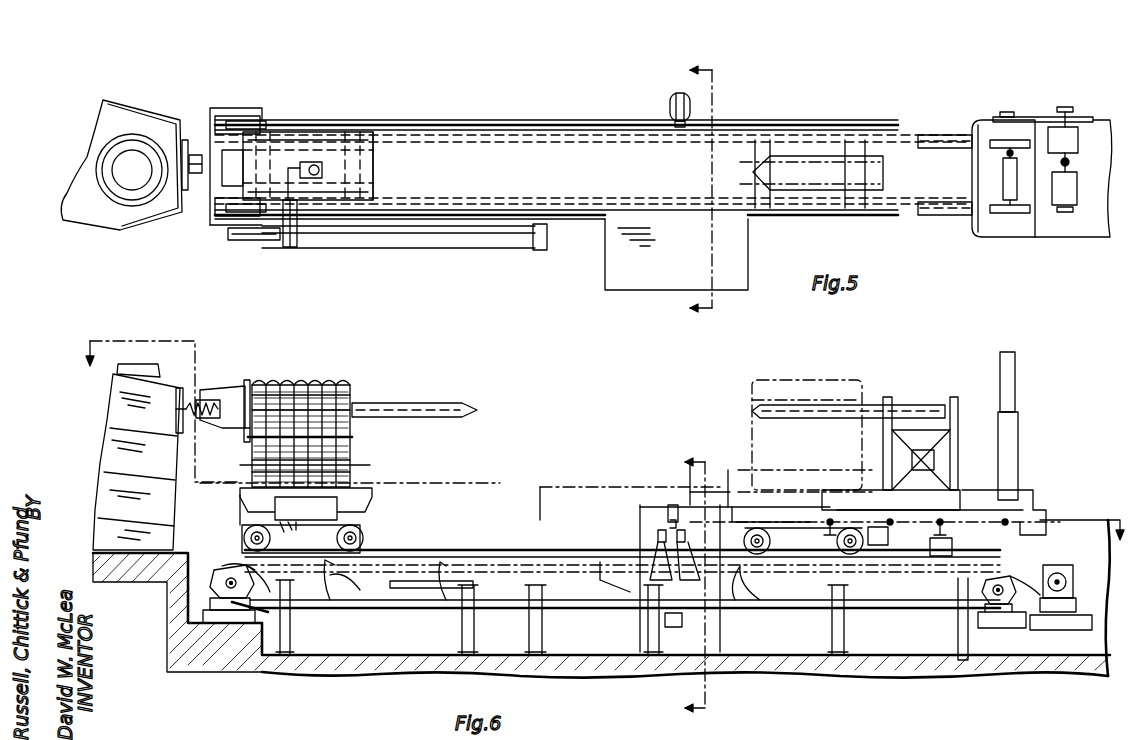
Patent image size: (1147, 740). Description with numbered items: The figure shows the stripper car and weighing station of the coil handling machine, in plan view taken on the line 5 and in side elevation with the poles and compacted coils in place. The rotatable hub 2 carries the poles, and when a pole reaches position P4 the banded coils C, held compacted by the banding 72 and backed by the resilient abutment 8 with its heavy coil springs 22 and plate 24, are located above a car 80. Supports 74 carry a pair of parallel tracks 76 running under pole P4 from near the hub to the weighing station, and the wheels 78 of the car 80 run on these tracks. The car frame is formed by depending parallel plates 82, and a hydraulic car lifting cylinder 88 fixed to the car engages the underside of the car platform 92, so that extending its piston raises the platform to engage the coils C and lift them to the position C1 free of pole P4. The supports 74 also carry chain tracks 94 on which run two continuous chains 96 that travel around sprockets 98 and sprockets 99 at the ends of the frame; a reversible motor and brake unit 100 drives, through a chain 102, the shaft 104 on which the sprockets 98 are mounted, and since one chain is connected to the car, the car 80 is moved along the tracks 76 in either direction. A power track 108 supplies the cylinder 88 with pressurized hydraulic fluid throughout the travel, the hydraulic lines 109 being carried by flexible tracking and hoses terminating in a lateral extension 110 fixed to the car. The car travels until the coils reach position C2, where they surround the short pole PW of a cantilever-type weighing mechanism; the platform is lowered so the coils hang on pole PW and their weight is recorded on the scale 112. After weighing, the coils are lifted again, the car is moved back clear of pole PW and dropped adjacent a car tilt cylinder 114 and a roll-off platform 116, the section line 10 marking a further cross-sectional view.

In FIG. 6, the rotatable hub 2 is at (166, 384).
In FIG. 6, the line 5— 5 is at (602, 451).
In FIG. 6, the resilient abutment 8 is at (244, 428).
In FIG. 5, the section line 10- 10 is at (683, 190).
In FIG. 6, the section line 10- 10 is at (678, 586).
In FIG. 6, the heavy coil springs 22 is at (206, 388).
In FIG. 6, the end plate 24 is at (250, 380).
In FIG. 6, the banding of the compressed coils 72 is at (352, 437).
In FIG. 6, the supports 74 is at (530, 627).
In FIG. 6, the parallel tracks 76 is at (532, 562).
In FIG. 6, the wheels 78 is at (362, 528).
In FIG. 5, the car 80 is at (383, 140).
In FIG. 6, the car 80 is at (368, 505).
In FIG. 6, the depending parallel plates 82 is at (332, 596).
In FIG. 5, the hydraulic car lifting cylinder 88 is at (318, 160).
In FIG. 6, the car platform 92 is at (370, 487).
In FIG. 6, the chain tracks 94 is at (270, 603).
In FIG. 5, the continuous chains 96 is at (474, 134).
In FIG. 5, the sprockets 98 is at (990, 140).
In FIG. 6, the sprockets 98 is at (1002, 604).
In FIG. 5, the sprockets 99 is at (228, 122).
In FIG. 6, the sprockets 99 is at (222, 572).
In FIG. 5, the motor and brake unit 100 is at (1078, 138).
In FIG. 6, the motor and brake unit 100 is at (1068, 558).
In FIG. 5, the chain 102 is at (1028, 117).
In FIG. 5, the shaft 104 is at (1003, 152).
In FIG. 6, the shaft 104 is at (1000, 580).
In FIG. 6, the power track 108 is at (440, 590).
In FIG. 5, the hydraulic lines 109 is at (252, 240).
In FIG. 5, the lateral extension 110 is at (291, 247).
In FIG. 6, the lateral extension 110 is at (306, 509).
In FIG. 6, the scale 112 is at (1010, 373).
In FIG. 5, the car tilt cylinder 114 is at (670, 104).
In FIG. 5, the roll-off platform 116 is at (626, 282).
In FIG. 5, the pole P4 is at (196, 155).
In FIG. 6, the pole P4 is at (446, 402).
In FIG. 6, the short pole PW is at (756, 400).
In FIG. 6, the coils C is at (352, 456).
In FIG. 6, the coil position C1 is at (320, 376).
In FIG. 6, the coil position C2 is at (768, 380).